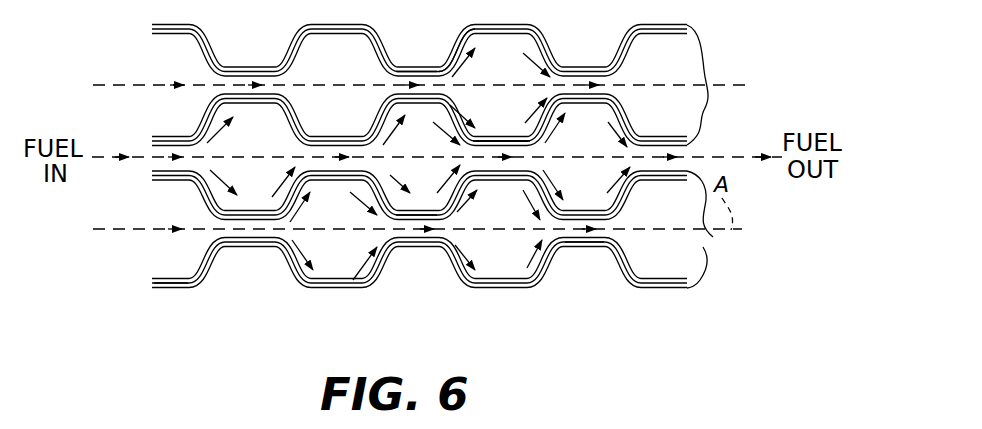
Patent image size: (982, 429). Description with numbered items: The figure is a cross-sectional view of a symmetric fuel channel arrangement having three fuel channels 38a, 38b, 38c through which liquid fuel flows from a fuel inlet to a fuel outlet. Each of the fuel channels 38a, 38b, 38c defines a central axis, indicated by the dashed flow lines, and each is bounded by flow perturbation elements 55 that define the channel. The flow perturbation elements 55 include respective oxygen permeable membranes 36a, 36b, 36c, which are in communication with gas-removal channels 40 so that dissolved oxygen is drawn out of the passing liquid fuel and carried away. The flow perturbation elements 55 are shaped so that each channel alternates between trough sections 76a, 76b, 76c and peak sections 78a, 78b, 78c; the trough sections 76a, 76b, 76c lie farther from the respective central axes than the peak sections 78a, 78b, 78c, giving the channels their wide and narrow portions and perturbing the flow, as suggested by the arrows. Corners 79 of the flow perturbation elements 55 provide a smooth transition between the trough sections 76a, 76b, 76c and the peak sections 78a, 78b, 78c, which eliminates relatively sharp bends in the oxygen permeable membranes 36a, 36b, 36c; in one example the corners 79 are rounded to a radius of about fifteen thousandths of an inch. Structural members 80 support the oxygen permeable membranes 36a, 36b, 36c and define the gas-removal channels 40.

The oxygen permeable membrane 36a is at (383, 53).
The oxygen permeable membrane 36b is at (468, 166).
The oxygen permeable membrane 36c is at (389, 233).
The fuel channel 38a is at (160, 52).
The fuel channel 38b is at (115, 157).
The fuel channel 38c is at (145, 245).
The gas-removal channel 40 is at (701, 90).
The flow perturbation element 55 is at (270, 125).
The trough section 76a is at (512, 36).
The trough section 76b is at (601, 104).
The trough section 76c is at (514, 181).
The peak section 78a is at (443, 79).
The peak section 78b is at (530, 141).
The peak section 78c is at (553, 239).
The corner 79 is at (204, 263).
The structural member 80 is at (629, 278).